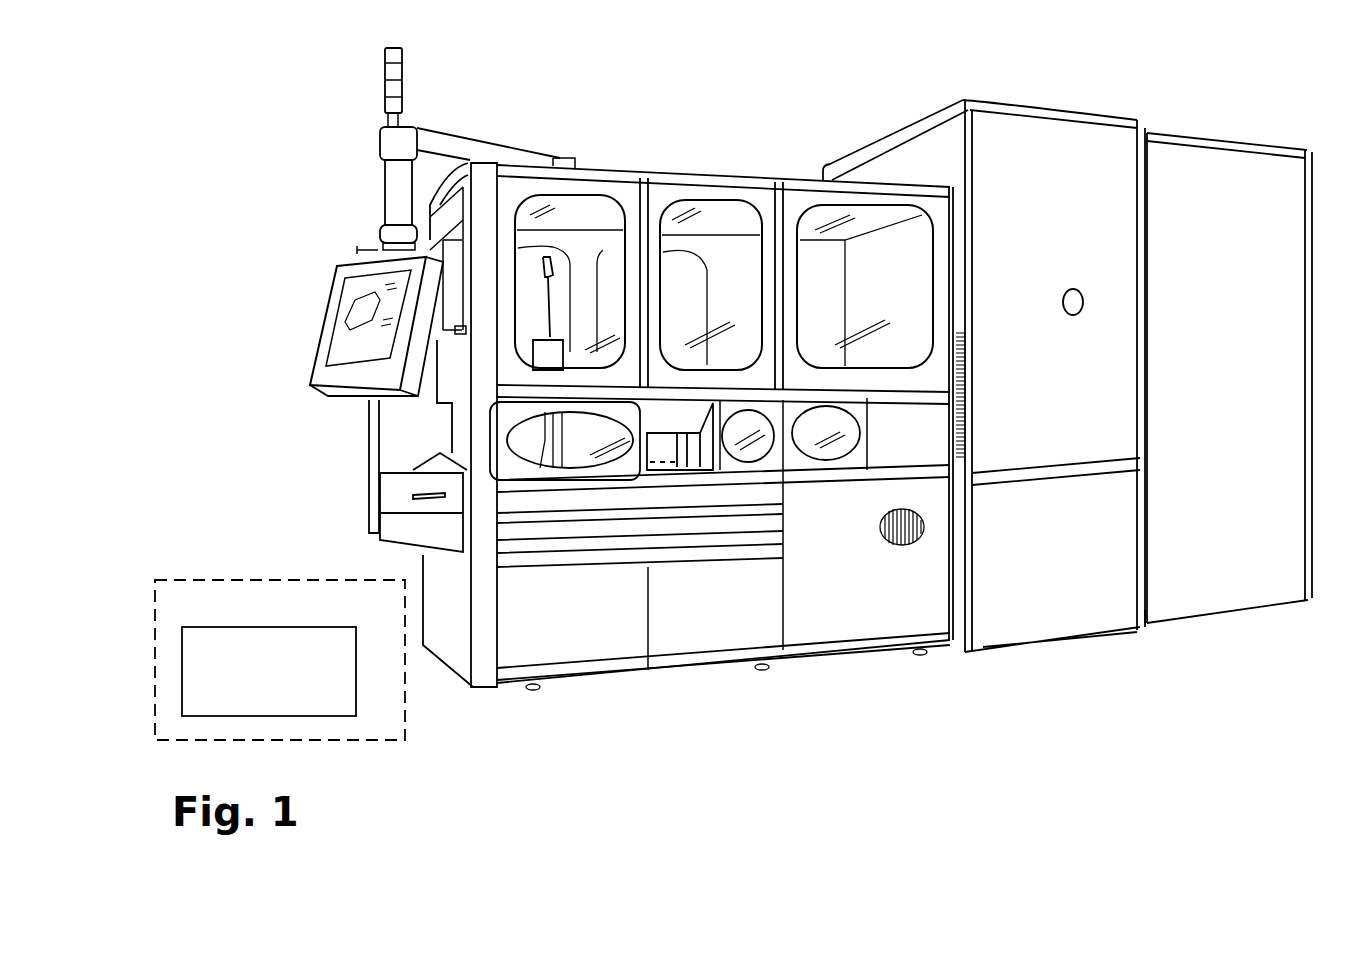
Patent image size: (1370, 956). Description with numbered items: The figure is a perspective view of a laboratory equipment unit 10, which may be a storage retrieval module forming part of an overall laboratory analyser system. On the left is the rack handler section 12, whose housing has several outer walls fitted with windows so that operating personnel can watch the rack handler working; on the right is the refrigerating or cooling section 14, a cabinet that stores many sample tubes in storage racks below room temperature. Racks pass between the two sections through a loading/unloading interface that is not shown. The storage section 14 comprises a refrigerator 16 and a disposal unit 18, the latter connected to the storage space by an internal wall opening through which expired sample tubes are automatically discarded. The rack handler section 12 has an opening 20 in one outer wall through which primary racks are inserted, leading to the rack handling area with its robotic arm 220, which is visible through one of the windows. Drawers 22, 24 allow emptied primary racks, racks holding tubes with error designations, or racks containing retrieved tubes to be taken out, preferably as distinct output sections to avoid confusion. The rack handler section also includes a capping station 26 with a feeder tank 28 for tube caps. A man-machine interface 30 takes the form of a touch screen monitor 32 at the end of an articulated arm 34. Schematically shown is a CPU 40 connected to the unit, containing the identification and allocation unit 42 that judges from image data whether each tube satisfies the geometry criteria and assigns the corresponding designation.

The laboratory equipment unit 10 is at (958, 697).
The rack handler section 12 is at (950, 670).
The refrigerating or cooling section 14 is at (1137, 377).
The refrigerator 16 is at (1172, 153).
The disposal unit 18 is at (1212, 380).
The opening 20 is at (677, 413).
The drawer 22 is at (782, 496).
The drawer 24 is at (782, 519).
The capping station 26 is at (376, 425).
The feeder tank 28 is at (400, 440).
The man-machine interface 30 is at (415, 151).
The touch screen monitor 32 is at (345, 283).
The articulated arm 34 is at (487, 157).
The CPU 40 is at (248, 580).
The identification and allocation unit 42 is at (203, 627).
The robotic arm 220 is at (552, 300).